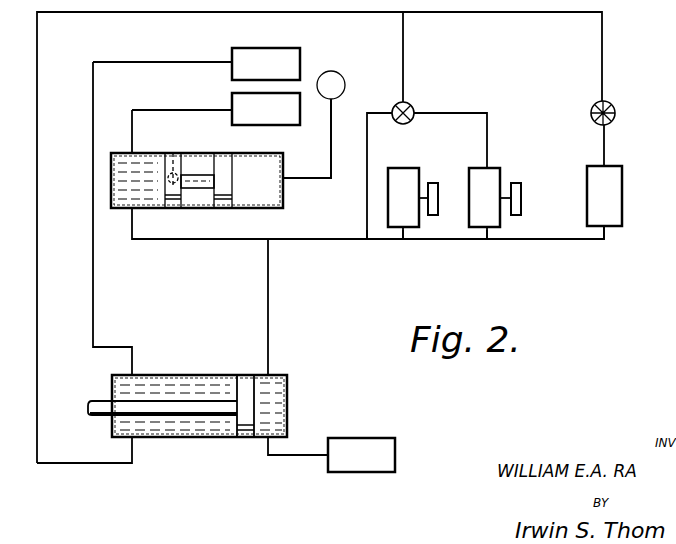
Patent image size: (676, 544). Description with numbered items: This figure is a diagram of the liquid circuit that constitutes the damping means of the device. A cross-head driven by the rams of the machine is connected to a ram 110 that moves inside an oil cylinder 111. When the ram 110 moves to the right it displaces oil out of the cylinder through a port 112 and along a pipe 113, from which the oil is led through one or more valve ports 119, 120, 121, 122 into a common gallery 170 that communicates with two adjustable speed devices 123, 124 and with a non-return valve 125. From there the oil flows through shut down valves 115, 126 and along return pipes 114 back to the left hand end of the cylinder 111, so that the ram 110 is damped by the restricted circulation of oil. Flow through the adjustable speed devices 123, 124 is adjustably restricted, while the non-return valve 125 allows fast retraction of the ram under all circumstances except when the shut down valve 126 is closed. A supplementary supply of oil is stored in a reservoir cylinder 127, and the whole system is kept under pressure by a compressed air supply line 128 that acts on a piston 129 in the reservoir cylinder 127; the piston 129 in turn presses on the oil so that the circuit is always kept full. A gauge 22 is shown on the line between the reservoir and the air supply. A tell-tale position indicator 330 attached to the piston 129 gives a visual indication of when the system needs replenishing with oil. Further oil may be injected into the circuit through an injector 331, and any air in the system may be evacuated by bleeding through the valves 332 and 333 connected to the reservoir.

The pressure gauge 22 is at (330, 74).
The ram 110 is at (95, 400).
The oil cylinder 111 is at (204, 385).
The port 112 is at (275, 374).
The pipe 113 is at (271, 297).
The return pipes 114 is at (402, 27).
The shut down valve 115 is at (395, 103).
The valve port 119 is at (370, 239).
The valve port 120 is at (415, 239).
The valve port 121 is at (487, 239).
The valve port 122 is at (602, 235).
The adjustable speed device 123 is at (436, 183).
The adjustable speed device 124 is at (517, 183).
The non-return valve 125 is at (592, 192).
The shut down valve 126 is at (591, 117).
The reservoir cylinder 127 is at (117, 150).
The compressed air supply line 128 is at (336, 178).
The piston 129 is at (229, 195).
The common gallery 170 is at (556, 240).
The tell-tale position indicator 330 is at (173, 153).
The injector 331 is at (356, 443).
The bleed valve 332 is at (292, 42).
The bleed valve 333 is at (283, 112).